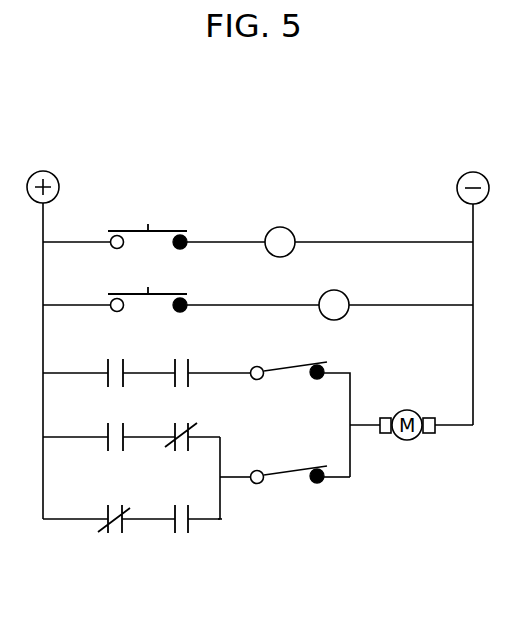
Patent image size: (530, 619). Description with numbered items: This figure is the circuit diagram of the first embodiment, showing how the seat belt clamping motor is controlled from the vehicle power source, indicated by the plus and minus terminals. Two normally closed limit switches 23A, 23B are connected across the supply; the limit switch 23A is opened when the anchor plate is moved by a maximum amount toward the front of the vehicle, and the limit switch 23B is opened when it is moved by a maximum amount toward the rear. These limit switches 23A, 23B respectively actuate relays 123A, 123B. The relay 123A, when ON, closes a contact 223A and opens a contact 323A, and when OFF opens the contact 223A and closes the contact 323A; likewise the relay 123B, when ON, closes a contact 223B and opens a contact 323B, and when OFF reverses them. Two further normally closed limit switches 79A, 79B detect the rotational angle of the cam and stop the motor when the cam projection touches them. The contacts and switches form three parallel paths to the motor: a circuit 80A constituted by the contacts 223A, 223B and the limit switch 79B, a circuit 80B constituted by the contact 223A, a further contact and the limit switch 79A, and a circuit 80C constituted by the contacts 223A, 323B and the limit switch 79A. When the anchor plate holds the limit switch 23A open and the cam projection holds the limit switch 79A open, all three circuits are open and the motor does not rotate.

The limit switch 23A is at (169, 230).
The limit switch 23B is at (170, 294).
The relay 123A is at (290, 226).
The relay 123B is at (350, 299).
The contact 223A is at (104, 368).
The contact 223B is at (200, 352).
The contact 323A is at (115, 537).
The contact 323B is at (180, 431).
The limit switch 79A is at (280, 468).
The limit switch 79B is at (282, 365).
The circuit 80A is at (340, 362).
The circuit 80B is at (224, 428).
The circuit 80C is at (222, 524).